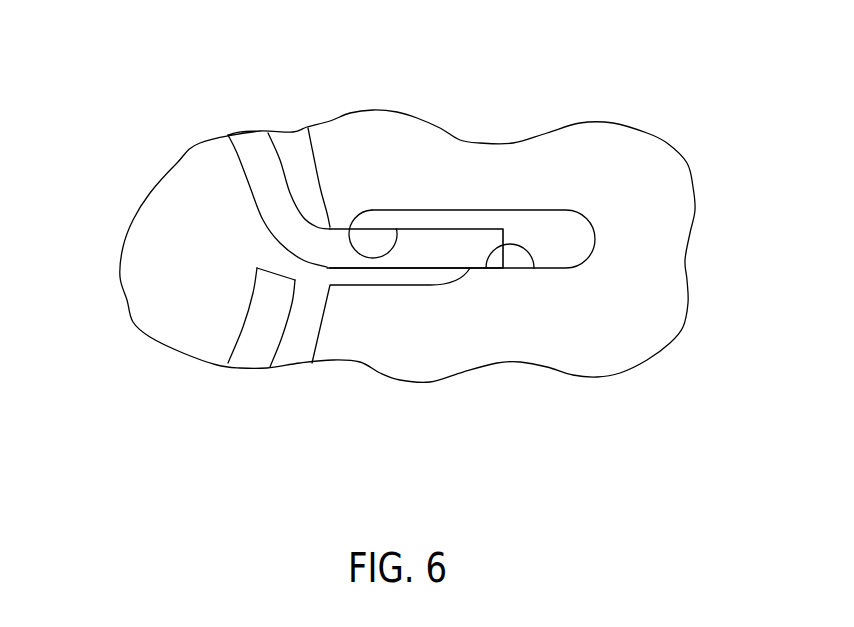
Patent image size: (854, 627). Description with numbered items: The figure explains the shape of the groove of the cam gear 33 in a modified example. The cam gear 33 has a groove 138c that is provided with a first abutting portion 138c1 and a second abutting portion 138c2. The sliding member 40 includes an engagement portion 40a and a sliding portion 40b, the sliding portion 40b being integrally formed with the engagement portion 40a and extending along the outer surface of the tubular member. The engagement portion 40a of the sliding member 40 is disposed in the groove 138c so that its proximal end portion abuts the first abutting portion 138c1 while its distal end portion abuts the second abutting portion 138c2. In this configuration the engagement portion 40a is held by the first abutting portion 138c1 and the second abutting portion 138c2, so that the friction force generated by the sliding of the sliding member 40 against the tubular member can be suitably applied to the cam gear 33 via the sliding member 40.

The cam gear 33 is at (633, 175).
The sliding member 40 is at (238, 227).
The engagement portion 40a is at (423, 252).
The sliding portion 40b is at (260, 175).
The groove 138c is at (560, 234).
The first abutting portion 138c1 is at (398, 210).
The second abutting portion 138c2 is at (535, 268).